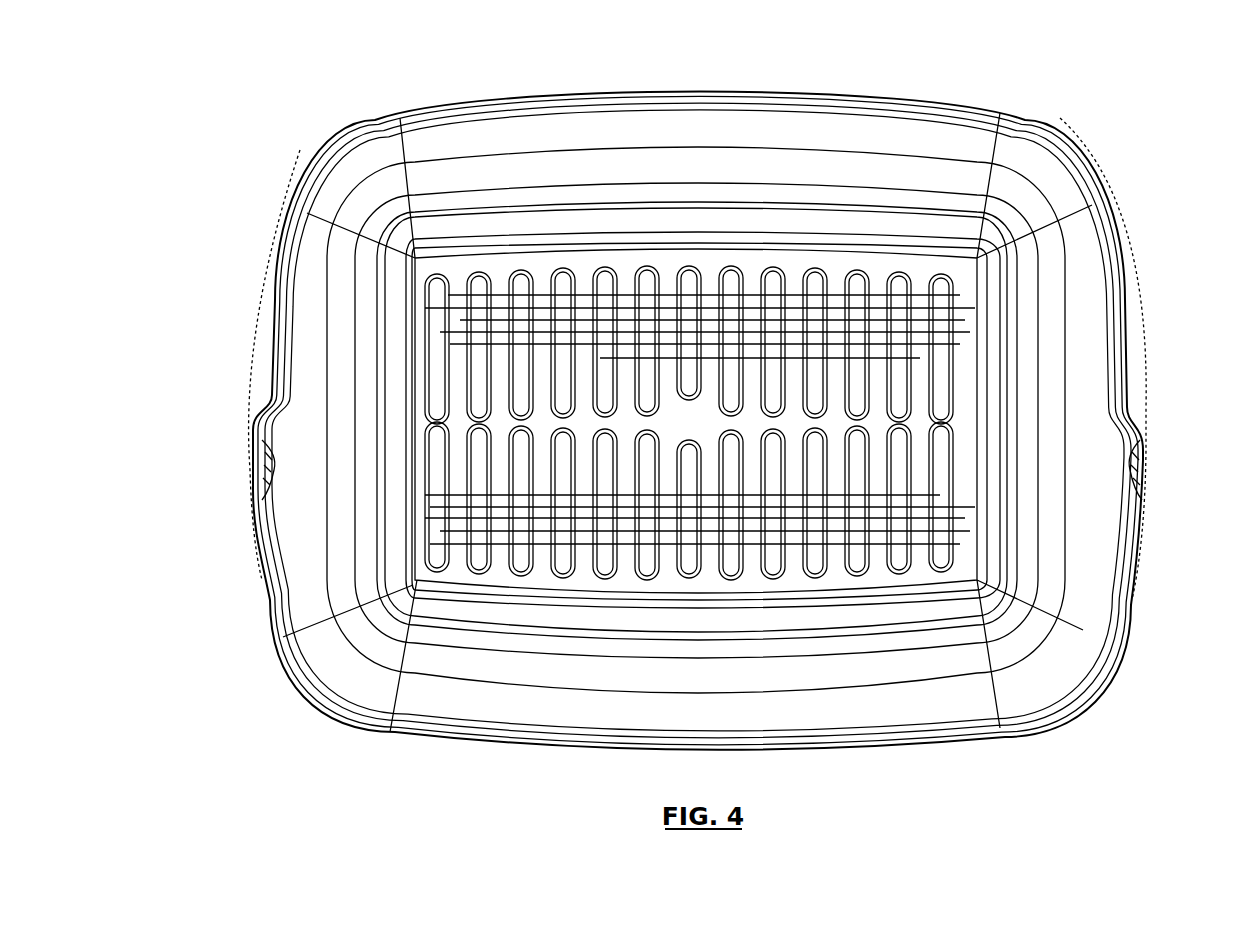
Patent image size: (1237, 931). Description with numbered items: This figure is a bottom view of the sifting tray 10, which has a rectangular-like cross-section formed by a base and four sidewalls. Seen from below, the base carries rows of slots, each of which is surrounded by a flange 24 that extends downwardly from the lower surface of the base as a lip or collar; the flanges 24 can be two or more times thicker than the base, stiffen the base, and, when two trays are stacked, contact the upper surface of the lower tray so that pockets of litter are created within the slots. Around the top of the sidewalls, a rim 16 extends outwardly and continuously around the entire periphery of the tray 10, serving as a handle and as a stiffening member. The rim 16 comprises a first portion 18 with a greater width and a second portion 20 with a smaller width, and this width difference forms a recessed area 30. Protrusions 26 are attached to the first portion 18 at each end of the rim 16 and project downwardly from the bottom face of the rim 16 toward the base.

The sifting tray 10 is at (680, 71).
The rim 16 is at (285, 601).
The first portion 18 is at (278, 548).
The second portion 20 is at (280, 351).
The flange 24 is at (433, 282).
The protrusion 26 is at (1137, 483).
The recessed area 30 is at (270, 287).